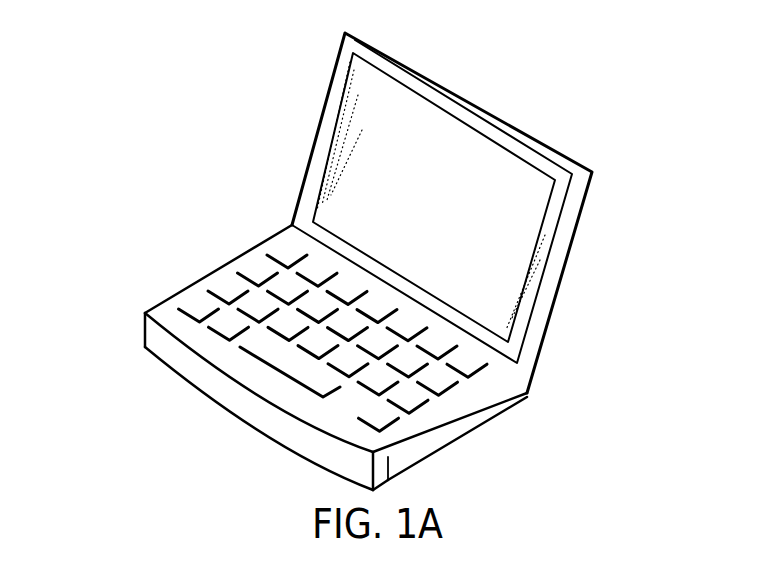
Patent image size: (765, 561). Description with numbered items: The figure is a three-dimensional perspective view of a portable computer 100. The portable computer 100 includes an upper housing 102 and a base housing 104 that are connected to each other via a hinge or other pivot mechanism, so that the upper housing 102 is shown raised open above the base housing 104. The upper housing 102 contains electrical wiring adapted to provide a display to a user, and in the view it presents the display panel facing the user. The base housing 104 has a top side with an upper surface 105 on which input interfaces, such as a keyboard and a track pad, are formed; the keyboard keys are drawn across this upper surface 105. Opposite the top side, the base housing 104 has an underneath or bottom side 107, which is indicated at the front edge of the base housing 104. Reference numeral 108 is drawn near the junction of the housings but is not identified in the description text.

The portable computer 100 is at (168, 130).
The upper housing 102 is at (557, 252).
The base housing 104 is at (170, 297).
The upper surface 105 is at (445, 412).
The bottom side 107 is at (430, 455).
The hinge 108 is at (292, 223).